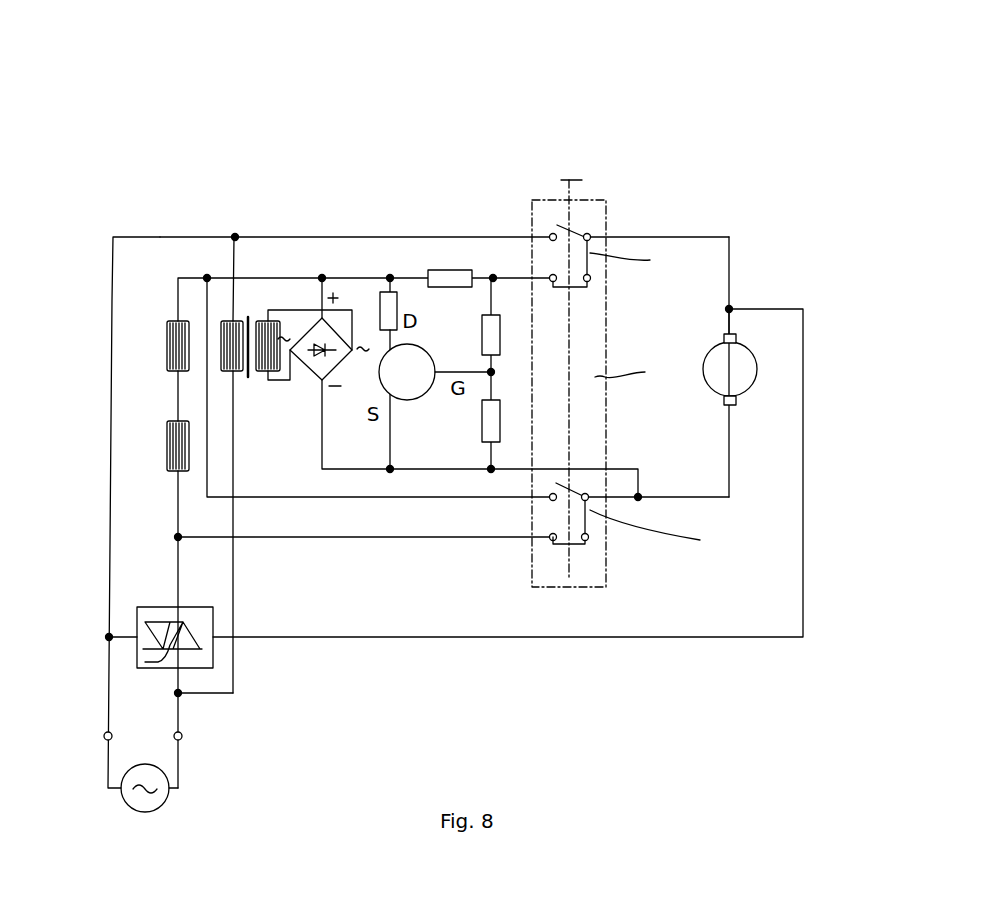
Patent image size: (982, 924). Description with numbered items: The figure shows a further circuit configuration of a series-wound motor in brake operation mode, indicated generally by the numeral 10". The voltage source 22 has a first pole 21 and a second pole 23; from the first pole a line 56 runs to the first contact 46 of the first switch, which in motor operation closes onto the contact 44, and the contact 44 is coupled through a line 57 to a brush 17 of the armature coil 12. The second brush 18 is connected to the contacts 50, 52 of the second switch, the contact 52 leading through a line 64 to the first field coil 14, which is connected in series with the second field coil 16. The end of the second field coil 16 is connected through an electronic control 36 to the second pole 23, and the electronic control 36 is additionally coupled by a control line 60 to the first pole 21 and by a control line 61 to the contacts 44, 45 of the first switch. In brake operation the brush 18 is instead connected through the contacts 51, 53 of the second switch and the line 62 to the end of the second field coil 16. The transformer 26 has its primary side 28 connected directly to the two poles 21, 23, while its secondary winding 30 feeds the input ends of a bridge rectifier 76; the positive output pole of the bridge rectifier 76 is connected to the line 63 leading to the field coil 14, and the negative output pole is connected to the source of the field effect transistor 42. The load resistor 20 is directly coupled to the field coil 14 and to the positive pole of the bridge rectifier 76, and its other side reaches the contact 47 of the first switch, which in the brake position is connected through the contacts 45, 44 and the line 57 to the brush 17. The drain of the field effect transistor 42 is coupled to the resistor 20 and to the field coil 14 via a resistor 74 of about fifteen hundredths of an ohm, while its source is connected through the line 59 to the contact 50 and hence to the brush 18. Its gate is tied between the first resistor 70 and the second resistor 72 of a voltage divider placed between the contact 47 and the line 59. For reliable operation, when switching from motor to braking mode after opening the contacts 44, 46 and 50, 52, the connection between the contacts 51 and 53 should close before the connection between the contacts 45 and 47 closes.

The series-wound motor circuit configuration 10 is at (790, 91).
The armature coil 12 is at (776, 351).
The first field coil 14 is at (167, 355).
The second field coil 16 is at (167, 452).
The brush 17 is at (737, 336).
The second brush 18 is at (737, 405).
The load resistor 20 is at (457, 270).
The first pole 21 is at (107, 741).
The voltage source 22 is at (155, 797).
The second pole 23 is at (182, 738).
The transformer 26 is at (299, 284).
The primary side 28 is at (222, 325).
The secondary winding 30 is at (258, 382).
The electronic control 36 is at (204, 660).
The field effect transistor 42 is at (402, 383).
The contact 44 is at (590, 242).
The contact 45 is at (590, 283).
The first contact 46 is at (581, 334).
The contact 47 is at (551, 235).
The contact 50 is at (589, 523).
The contact 51 is at (587, 540).
The contact 52 is at (551, 498).
The contact 53 is at (551, 538).
The line 56 is at (160, 237).
The line 57 is at (733, 262).
The line 59 is at (440, 477).
The control line 60 is at (122, 636).
The control line 61 is at (803, 580).
The line 62 is at (255, 539).
The line 63 is at (286, 278).
The line 64 is at (270, 498).
The first resistor 70 is at (501, 337).
The second resistor 72 is at (501, 430).
The resistor 74 is at (391, 276).
The bridge rectifier 76 is at (385, 300).